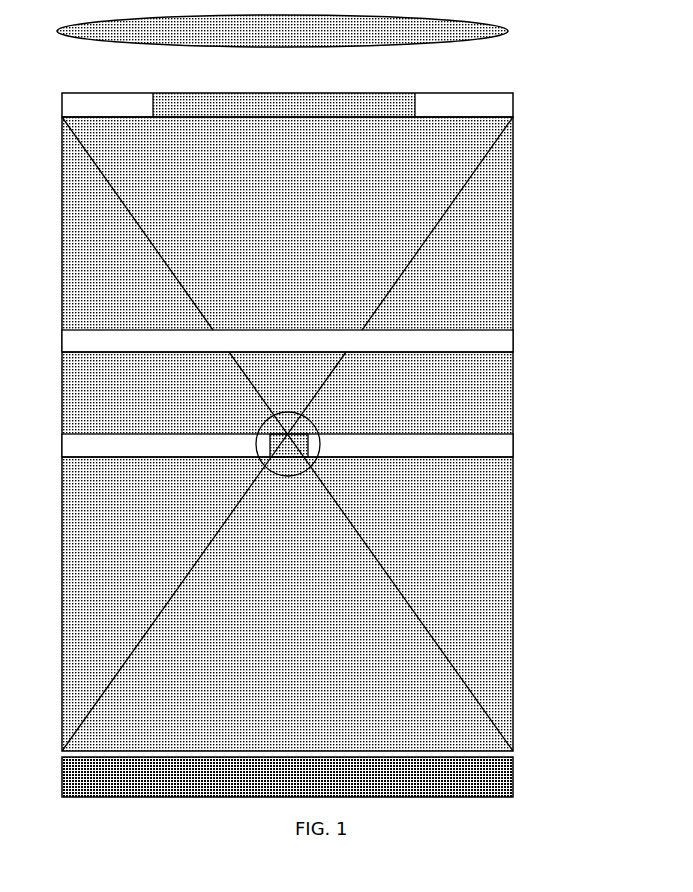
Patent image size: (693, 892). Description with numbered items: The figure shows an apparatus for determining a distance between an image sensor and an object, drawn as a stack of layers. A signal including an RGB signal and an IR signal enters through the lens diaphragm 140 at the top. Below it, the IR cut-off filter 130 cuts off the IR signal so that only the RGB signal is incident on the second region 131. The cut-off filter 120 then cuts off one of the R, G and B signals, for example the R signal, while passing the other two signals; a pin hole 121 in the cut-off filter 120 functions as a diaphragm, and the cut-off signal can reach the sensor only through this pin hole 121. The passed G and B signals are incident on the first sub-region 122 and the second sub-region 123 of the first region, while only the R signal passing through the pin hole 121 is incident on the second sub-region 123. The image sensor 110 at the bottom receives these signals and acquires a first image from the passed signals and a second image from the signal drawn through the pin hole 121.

The image sensor 110 is at (503, 776).
The cut-off filter 120 is at (500, 445).
The pin hole 121 is at (308, 452).
The 1-1 region 122 is at (147, 530).
The 1-2 region 123 is at (267, 648).
The IR cut-off filter 130 is at (498, 341).
The second region 131 is at (162, 389).
The lens diaphragm 140 is at (415, 103).